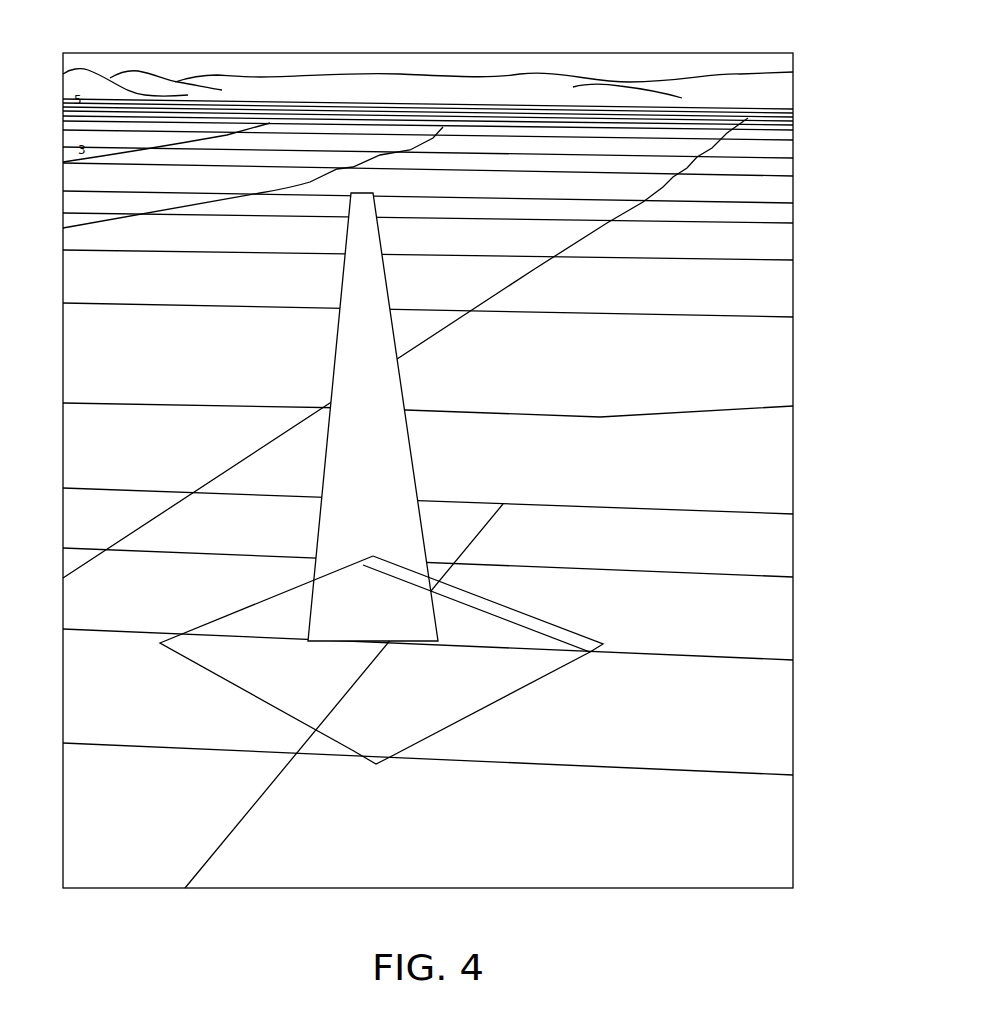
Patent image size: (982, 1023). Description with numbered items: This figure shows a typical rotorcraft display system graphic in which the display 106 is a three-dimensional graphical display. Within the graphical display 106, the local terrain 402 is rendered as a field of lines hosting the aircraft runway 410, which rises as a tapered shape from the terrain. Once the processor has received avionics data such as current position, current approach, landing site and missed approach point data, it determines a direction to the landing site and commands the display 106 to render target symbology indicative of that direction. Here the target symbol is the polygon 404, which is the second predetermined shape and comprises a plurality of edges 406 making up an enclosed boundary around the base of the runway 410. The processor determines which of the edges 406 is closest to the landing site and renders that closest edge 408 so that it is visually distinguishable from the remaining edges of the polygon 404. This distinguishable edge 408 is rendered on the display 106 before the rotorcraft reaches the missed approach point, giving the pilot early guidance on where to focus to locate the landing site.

The display 106 is at (313, 78).
The local terrain 402 is at (773, 233).
The polygon 404 is at (375, 722).
The edges 406 is at (528, 688).
The closest edge 408 is at (563, 628).
The aircraft runway 410 is at (409, 440).